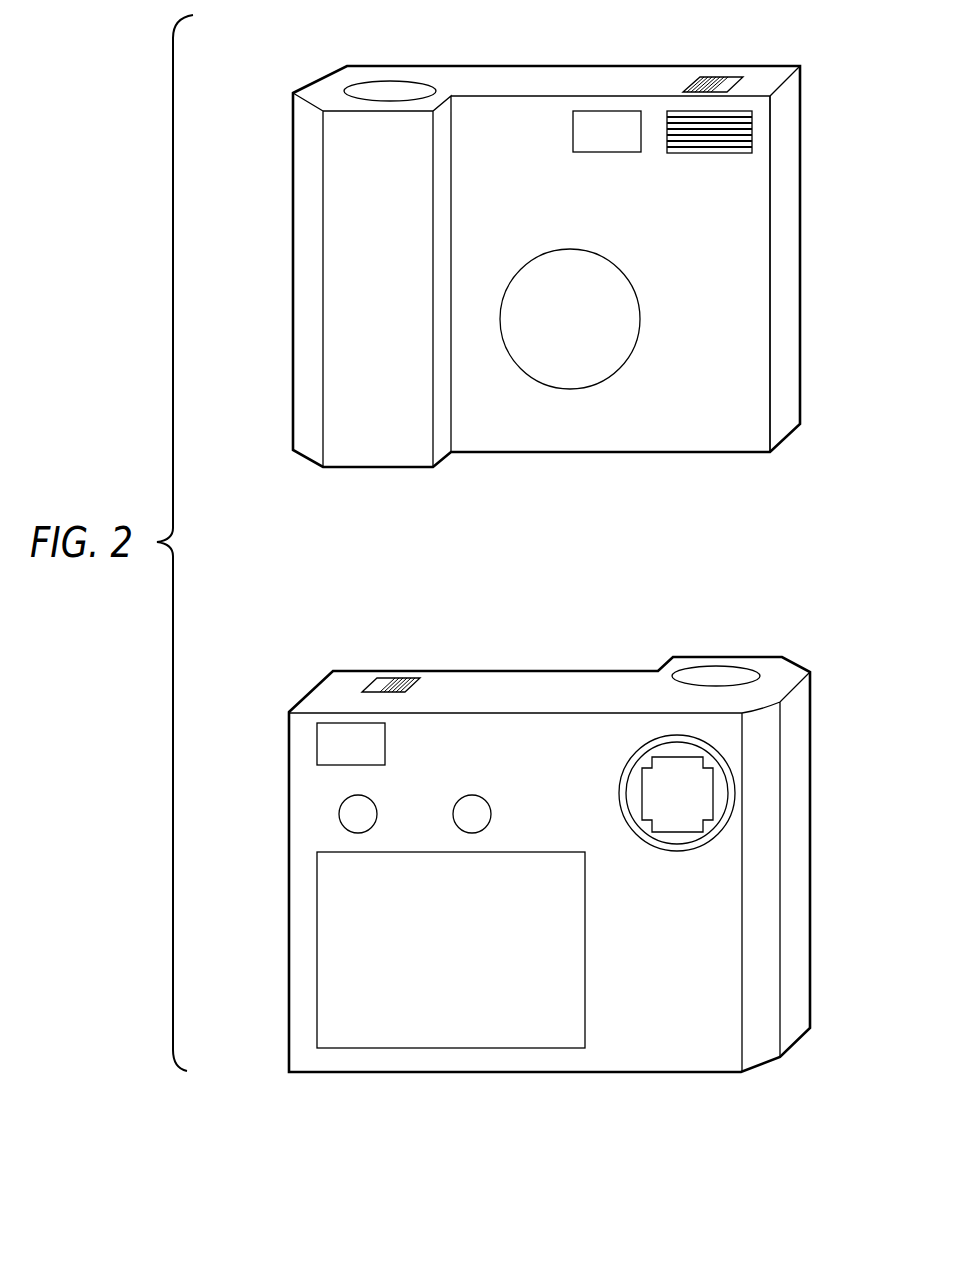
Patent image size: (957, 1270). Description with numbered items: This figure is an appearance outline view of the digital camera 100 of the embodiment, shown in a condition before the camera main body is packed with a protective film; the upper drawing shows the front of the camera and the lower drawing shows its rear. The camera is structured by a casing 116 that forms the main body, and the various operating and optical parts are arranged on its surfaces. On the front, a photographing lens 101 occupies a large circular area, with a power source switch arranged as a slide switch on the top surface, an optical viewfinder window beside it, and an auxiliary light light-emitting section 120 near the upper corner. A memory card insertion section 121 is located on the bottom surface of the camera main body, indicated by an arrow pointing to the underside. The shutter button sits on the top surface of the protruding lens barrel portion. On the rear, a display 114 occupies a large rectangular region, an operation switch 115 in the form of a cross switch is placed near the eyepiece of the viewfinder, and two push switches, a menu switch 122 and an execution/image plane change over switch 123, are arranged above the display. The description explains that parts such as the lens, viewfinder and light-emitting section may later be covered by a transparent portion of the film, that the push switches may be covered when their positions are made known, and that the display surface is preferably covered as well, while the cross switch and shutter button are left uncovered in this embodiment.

The digital camera 100 is at (548, 528).
The photographing lens 101 is at (567, 373).
The display 114 is at (316, 946).
The operation switch 115 is at (703, 795).
The casing 116 is at (783, 277).
The auxiliary light light-emitting section 120 is at (752, 134).
The memory card insertion section 121 is at (694, 465).
The menu switch 122 is at (340, 818).
The execution/image plane change over switch 123 is at (472, 795).